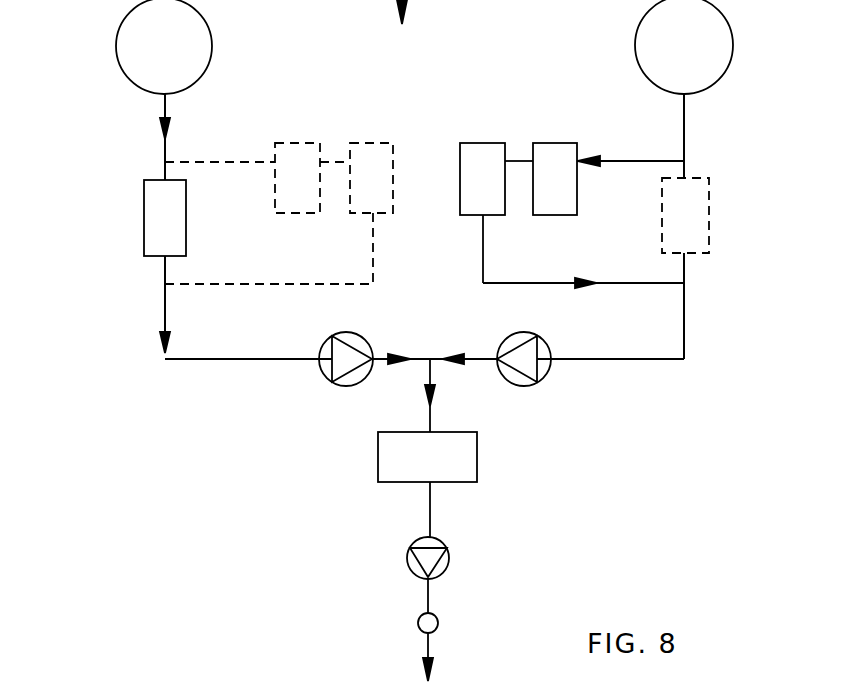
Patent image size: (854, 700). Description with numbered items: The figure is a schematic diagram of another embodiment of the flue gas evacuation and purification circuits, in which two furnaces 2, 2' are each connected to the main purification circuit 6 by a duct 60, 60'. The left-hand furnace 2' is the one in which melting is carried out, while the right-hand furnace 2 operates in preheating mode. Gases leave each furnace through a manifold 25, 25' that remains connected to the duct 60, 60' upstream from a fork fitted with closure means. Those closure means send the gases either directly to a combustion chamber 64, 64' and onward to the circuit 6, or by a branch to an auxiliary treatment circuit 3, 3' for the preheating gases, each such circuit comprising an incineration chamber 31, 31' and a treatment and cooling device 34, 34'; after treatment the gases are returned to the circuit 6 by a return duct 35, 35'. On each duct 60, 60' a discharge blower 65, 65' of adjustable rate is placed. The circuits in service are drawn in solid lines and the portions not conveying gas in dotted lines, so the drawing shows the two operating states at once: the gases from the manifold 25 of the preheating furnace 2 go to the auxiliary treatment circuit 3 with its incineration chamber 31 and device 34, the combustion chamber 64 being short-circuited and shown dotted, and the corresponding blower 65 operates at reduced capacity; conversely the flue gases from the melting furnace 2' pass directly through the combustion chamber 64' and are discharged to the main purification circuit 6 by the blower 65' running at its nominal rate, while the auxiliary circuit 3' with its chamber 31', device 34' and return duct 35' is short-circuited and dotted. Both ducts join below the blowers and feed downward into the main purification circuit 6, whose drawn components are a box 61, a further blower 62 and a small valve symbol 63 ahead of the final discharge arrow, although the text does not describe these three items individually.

The furnace 2' is at (131, 47).
The furnace 2 is at (707, 47).
The manifold 25' is at (121, 135).
The manifold 25 is at (725, 136).
The incineration chamber 31' is at (297, 151).
The treatment and cooling device 34' is at (373, 151).
The treatment and cooling device 34 is at (482, 152).
The incineration chamber 31 is at (567, 152).
The combustion chamber 64' is at (126, 218).
The combustion chamber 64 is at (730, 215).
The auxiliary treatment circuit 3' is at (334, 208).
The auxiliary treatment circuit 3 is at (518, 208).
The duct 60' is at (129, 304).
The duct 60 is at (722, 306).
The return duct 35' is at (269, 311).
The return duct 35 is at (583, 312).
The discharge blower 65' is at (371, 348).
The discharge blower 65 is at (501, 348).
The mixing tank 61 is at (478, 457).
The main purification circuit 6 is at (378, 490).
The discharge pump 62 is at (450, 558).
The discharge valve 63 is at (438, 620).